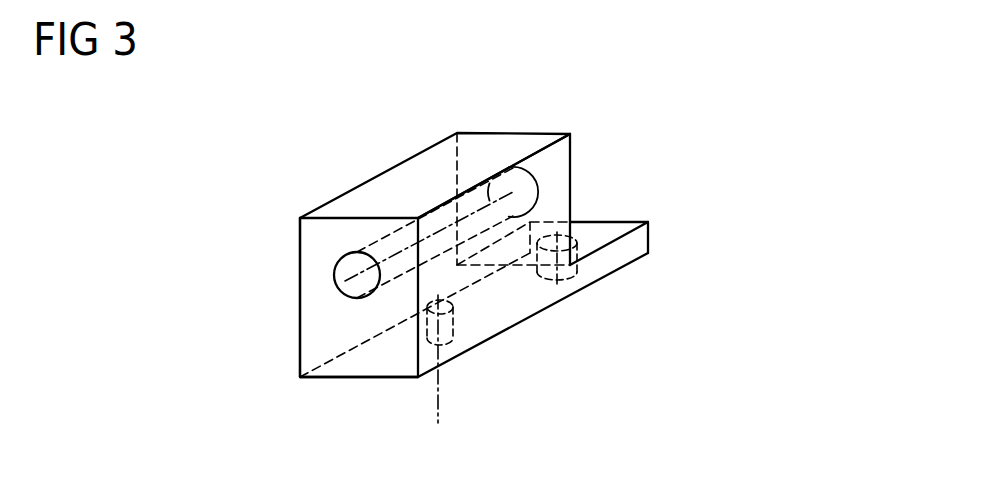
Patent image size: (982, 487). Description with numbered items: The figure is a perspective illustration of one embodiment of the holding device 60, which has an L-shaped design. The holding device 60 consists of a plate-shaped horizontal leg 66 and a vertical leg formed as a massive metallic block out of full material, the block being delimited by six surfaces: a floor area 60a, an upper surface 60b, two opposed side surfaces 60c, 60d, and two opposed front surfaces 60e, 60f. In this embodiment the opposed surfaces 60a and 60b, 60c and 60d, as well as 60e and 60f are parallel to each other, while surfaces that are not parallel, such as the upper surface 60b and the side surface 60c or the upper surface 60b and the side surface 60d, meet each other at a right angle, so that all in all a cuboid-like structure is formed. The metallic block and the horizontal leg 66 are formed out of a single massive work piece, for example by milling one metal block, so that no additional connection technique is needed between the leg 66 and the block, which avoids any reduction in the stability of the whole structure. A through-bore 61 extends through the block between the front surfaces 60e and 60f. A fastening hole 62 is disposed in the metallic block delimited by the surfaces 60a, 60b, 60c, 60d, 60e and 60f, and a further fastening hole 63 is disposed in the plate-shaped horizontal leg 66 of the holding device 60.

The holding device 60 is at (623, 180).
The floor area 60a is at (353, 378).
The upper surface 60b is at (398, 190).
The side surface 60c is at (513, 293).
The side surface 60d is at (300, 253).
The front surface 60e is at (327, 323).
The front surface 60f is at (550, 163).
The through-bore 61 is at (345, 270).
The fastening hole 62 is at (447, 386).
The fastening hole 63 is at (577, 250).
The horizontal leg 66 is at (633, 252).